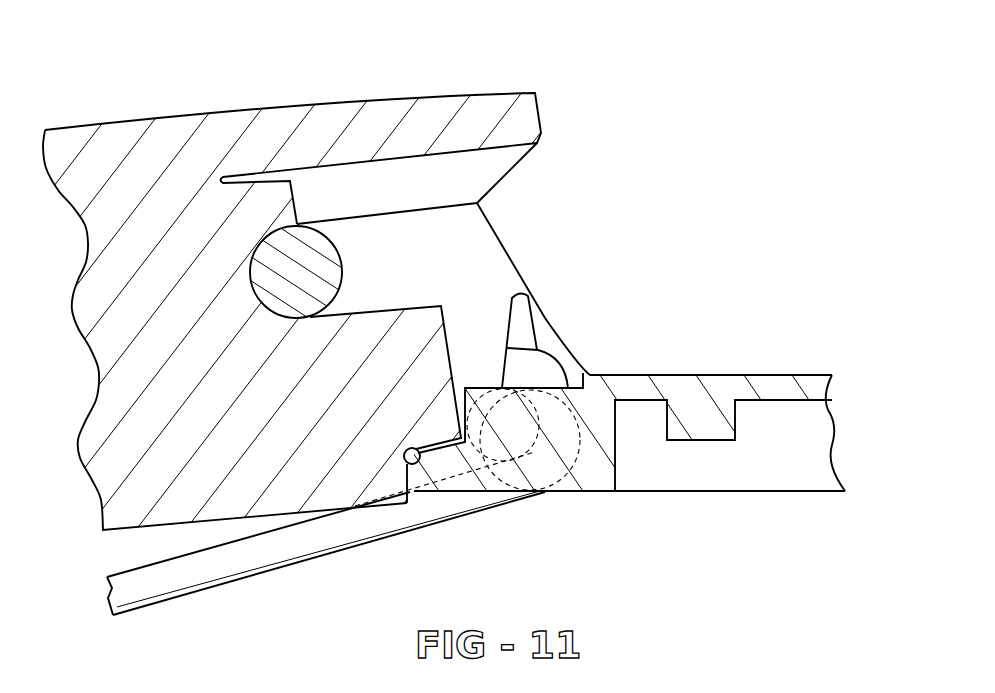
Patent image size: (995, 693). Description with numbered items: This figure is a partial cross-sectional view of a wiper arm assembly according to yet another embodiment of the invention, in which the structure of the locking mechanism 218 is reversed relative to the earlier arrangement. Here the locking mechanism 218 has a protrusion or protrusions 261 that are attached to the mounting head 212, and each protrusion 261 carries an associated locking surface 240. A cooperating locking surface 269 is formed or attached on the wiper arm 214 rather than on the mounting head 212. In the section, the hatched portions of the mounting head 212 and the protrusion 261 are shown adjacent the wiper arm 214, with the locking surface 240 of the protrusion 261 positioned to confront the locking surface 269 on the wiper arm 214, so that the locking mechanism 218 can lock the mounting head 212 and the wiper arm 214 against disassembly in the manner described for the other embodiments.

The mounting head 212 is at (712, 374).
The wiper arm 214 is at (123, 531).
The locking mechanism 218 is at (383, 388).
The locking surface 240 is at (410, 472).
The protrusion 261 is at (420, 496).
The locking surface 269 is at (409, 449).